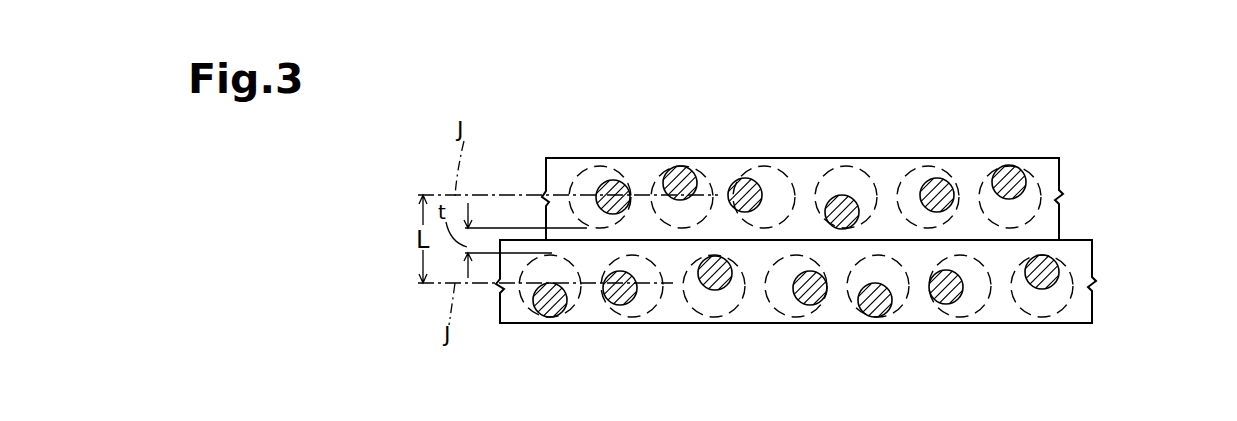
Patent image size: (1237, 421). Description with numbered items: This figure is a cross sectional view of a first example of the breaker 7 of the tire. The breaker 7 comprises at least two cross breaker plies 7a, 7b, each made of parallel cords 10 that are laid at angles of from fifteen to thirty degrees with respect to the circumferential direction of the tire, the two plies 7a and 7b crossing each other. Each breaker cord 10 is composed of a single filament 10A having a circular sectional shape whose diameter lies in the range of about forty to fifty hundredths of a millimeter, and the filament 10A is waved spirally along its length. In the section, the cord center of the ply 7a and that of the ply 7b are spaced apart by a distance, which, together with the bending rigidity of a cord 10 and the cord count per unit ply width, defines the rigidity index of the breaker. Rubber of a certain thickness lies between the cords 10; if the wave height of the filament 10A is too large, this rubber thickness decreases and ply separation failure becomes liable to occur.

The breaker 7 is at (1133, 105).
The breaker ply 7a is at (1093, 257).
The breaker ply 7b is at (1062, 168).
The breaker cord 10 is at (1014, 165).
The filament 10A is at (930, 180).